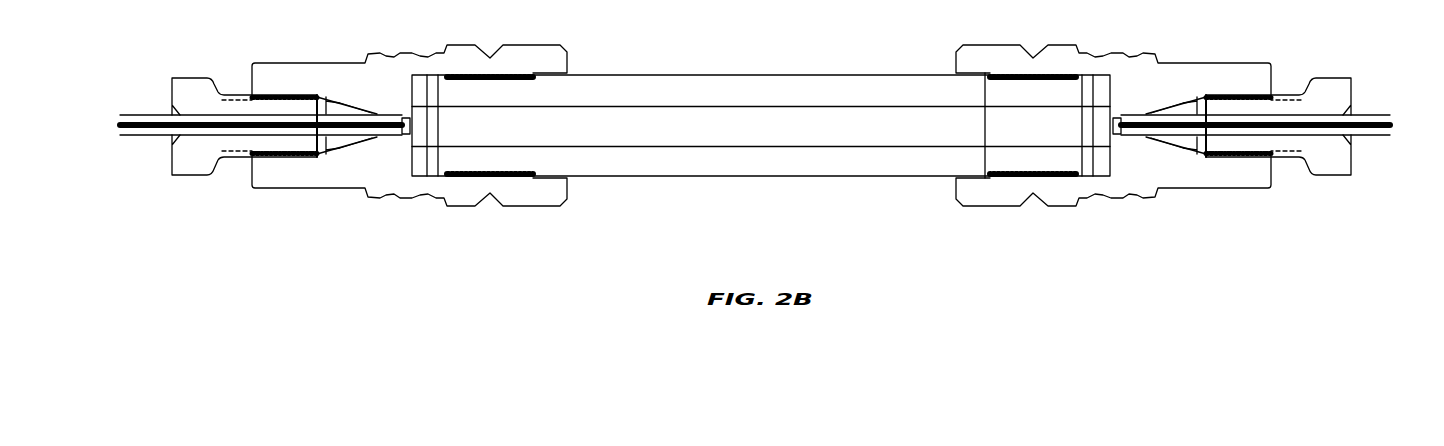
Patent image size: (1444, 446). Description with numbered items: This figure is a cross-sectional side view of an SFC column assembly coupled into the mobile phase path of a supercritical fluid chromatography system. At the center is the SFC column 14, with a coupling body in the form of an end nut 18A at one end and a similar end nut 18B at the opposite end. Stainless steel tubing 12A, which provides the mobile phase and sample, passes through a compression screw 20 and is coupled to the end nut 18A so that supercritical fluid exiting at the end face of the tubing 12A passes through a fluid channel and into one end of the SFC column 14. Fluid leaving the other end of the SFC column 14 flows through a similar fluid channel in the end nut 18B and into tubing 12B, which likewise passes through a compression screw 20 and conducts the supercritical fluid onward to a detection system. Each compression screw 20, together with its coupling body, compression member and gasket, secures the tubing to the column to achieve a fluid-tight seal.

The SFC column 14 is at (763, 75).
The stainless steel tubing 12A is at (135, 115).
The tubing 12B is at (1382, 115).
The end nut 18A is at (462, 207).
The end nut 18B is at (1066, 207).
The compression screw 20 is at (190, 176).